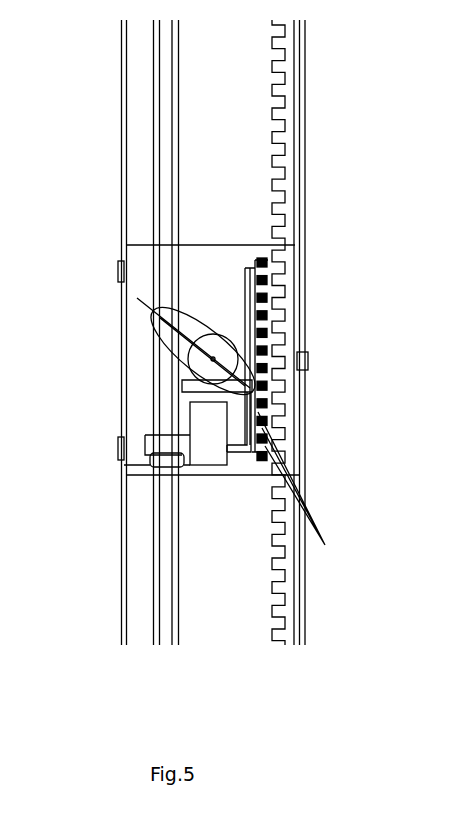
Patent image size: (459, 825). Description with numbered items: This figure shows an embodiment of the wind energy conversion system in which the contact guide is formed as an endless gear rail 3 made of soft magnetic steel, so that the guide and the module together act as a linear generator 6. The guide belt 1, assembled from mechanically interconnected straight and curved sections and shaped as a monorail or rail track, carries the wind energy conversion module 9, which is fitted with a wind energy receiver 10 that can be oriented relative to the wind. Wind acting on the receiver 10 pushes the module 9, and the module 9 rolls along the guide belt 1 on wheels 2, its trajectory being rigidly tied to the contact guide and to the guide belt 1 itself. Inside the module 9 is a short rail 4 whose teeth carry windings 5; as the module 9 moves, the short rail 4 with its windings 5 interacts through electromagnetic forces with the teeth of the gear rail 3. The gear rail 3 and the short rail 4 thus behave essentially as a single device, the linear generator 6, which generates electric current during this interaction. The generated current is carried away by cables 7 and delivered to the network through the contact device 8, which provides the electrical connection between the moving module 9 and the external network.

The guide belt 1 is at (302, 158).
The wheels 2 is at (120, 440).
The continuous gear rail 3 is at (285, 98).
The short rail 4 is at (267, 269).
The windings 5 is at (273, 275).
The linear generator 6 is at (210, 440).
The cables 7 is at (175, 492).
The contact device 8 is at (168, 455).
The wind energy conversion module 9 is at (146, 262).
The wind energy receiver 10 is at (193, 335).